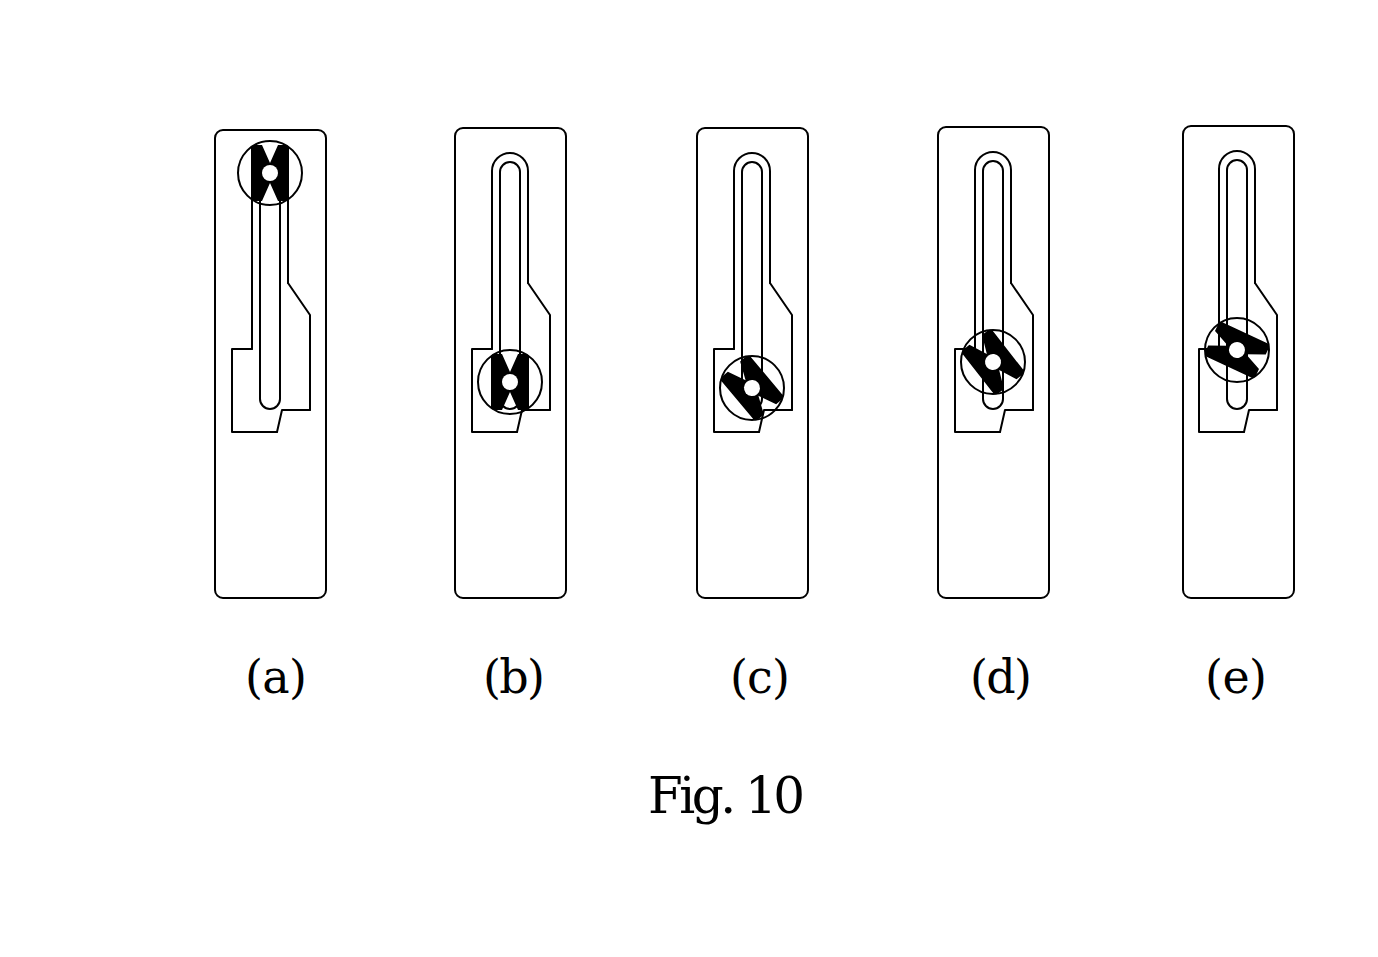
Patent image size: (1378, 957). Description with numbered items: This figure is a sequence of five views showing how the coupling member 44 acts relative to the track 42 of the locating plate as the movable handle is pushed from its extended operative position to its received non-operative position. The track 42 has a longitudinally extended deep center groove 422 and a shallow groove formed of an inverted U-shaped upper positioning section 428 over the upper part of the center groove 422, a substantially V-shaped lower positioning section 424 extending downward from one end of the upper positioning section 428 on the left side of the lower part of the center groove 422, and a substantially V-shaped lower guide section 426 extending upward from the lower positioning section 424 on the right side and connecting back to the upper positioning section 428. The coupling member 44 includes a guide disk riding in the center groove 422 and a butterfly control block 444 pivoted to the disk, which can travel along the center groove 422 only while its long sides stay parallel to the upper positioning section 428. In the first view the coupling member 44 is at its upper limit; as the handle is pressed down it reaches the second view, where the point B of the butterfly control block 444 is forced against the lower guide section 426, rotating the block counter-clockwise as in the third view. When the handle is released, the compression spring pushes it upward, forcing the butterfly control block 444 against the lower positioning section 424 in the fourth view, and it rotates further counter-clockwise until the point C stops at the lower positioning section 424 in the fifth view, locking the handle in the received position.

The track 42 is at (251, 270).
The center groove 422 is at (270, 383).
The lower positioning section 424 is at (250, 348).
The lower guide section 426 is at (283, 412).
The upper positioning section 428 is at (289, 230).
The coupling member 44 is at (293, 151).
The butterfly control block 444 is at (253, 155).
The point B is at (521, 414).
The point C is at (284, 145).